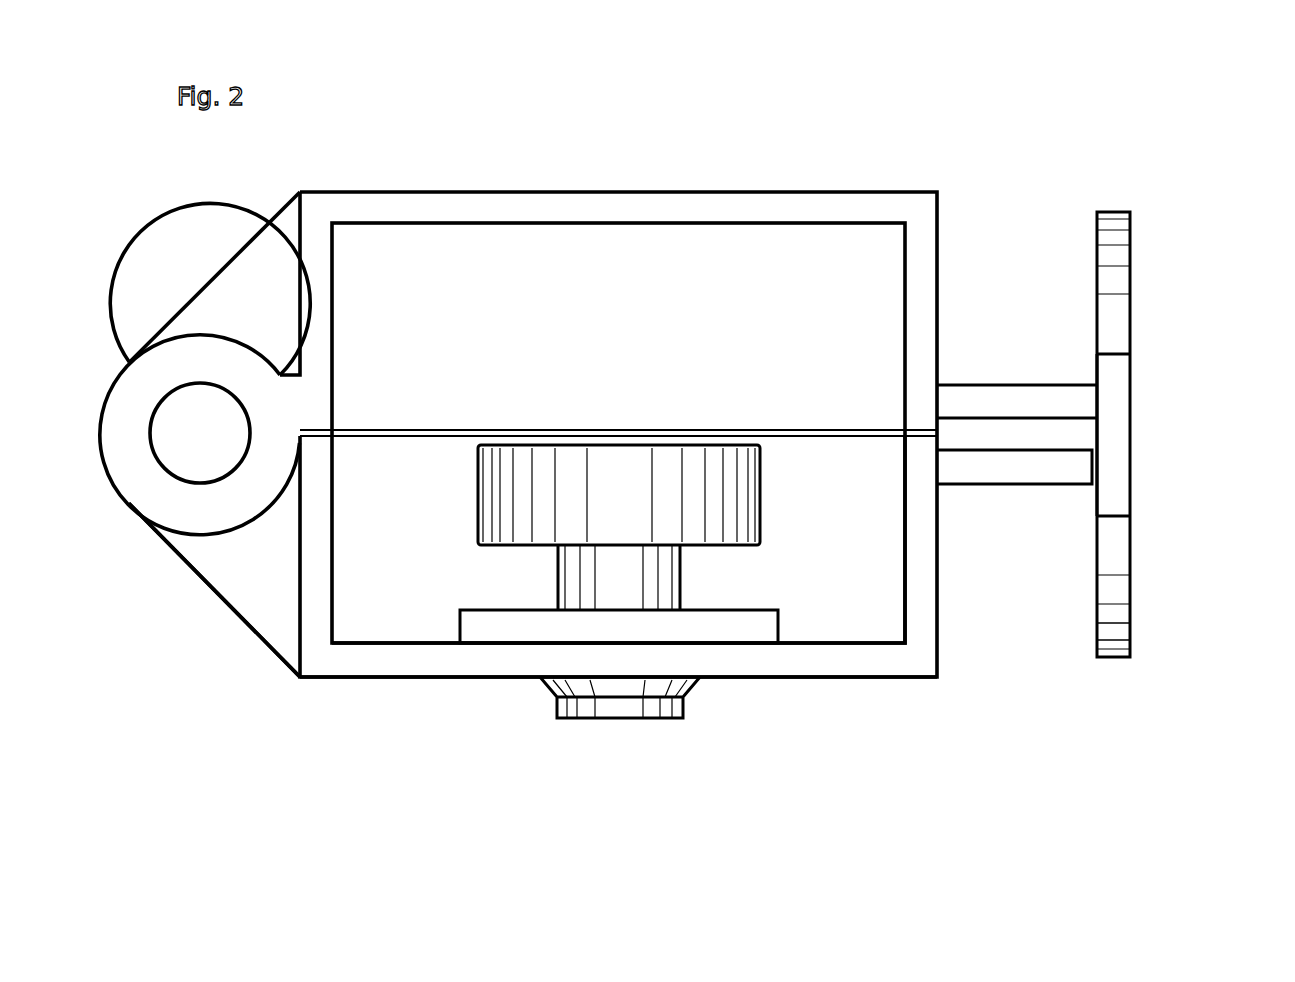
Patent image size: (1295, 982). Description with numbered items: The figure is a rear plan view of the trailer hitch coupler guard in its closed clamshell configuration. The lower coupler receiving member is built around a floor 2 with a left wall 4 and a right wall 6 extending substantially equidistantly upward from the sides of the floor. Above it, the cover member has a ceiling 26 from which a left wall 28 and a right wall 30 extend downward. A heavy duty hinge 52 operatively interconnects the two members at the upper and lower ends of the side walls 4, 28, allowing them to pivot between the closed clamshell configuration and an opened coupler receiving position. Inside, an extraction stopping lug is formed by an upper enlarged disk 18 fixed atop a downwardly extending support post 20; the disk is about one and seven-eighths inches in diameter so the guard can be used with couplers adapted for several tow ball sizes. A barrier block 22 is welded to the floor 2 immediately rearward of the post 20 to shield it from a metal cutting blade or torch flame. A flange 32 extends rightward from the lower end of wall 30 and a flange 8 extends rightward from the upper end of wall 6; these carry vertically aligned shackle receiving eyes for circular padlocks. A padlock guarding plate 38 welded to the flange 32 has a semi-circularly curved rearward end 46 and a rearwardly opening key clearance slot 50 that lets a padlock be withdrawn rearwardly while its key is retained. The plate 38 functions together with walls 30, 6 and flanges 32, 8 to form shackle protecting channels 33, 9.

The floor 2 is at (435, 660).
The left wall 4 is at (313, 570).
The right wall 6 is at (925, 587).
The flange 8 is at (1020, 555).
The shackle protecting channel 9 is at (1067, 474).
The upper enlarged disk 18 is at (750, 505).
The support post 20 is at (672, 578).
The barrier block 22 is at (510, 630).
The ceiling 26 is at (528, 212).
The left wall 28 is at (313, 326).
The right wall 30 is at (923, 295).
The flange 32 is at (1075, 400).
The shackle protecting channel 33 is at (1027, 315).
The padlock guarding plate 38 is at (1120, 212).
The rearward end 46 is at (1117, 633).
The key clearance slot 50 is at (1114, 440).
The heavy duty hinge 52 is at (197, 435).